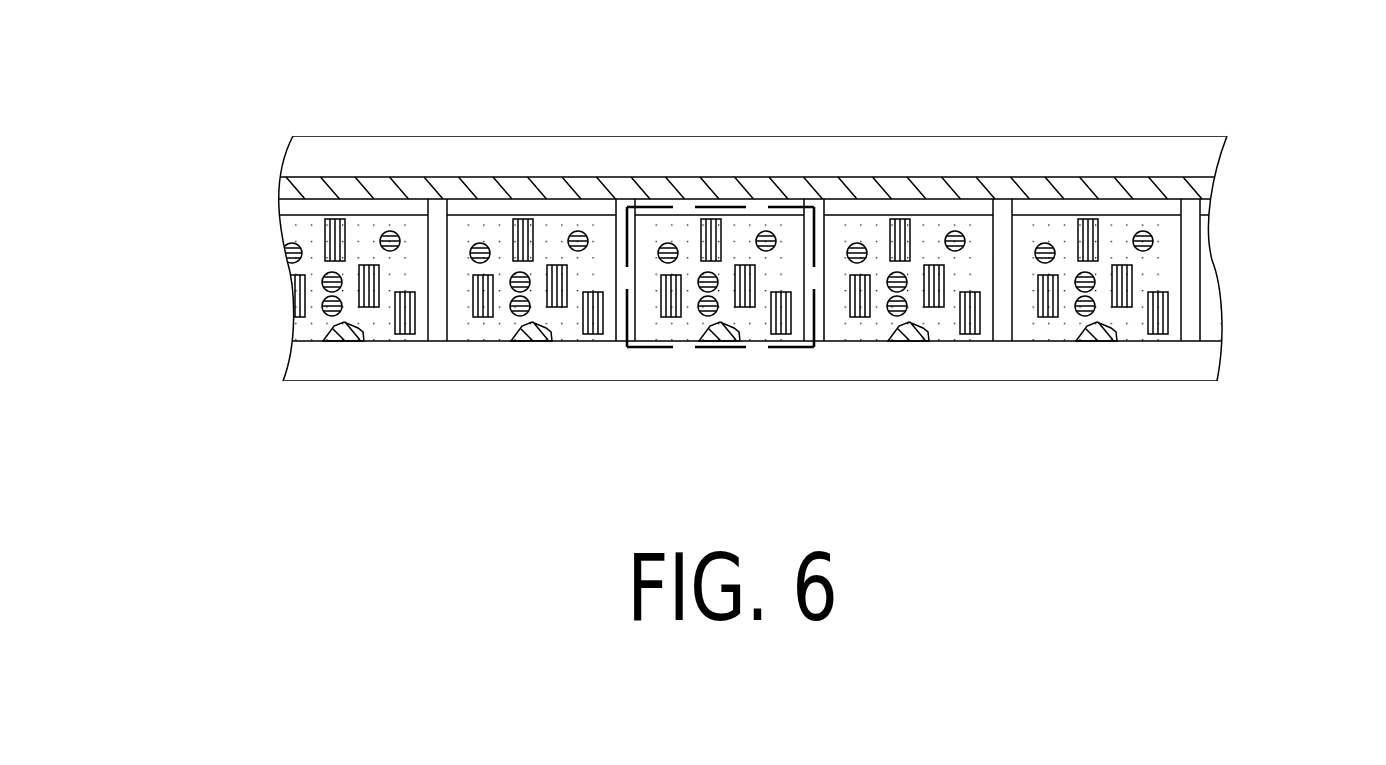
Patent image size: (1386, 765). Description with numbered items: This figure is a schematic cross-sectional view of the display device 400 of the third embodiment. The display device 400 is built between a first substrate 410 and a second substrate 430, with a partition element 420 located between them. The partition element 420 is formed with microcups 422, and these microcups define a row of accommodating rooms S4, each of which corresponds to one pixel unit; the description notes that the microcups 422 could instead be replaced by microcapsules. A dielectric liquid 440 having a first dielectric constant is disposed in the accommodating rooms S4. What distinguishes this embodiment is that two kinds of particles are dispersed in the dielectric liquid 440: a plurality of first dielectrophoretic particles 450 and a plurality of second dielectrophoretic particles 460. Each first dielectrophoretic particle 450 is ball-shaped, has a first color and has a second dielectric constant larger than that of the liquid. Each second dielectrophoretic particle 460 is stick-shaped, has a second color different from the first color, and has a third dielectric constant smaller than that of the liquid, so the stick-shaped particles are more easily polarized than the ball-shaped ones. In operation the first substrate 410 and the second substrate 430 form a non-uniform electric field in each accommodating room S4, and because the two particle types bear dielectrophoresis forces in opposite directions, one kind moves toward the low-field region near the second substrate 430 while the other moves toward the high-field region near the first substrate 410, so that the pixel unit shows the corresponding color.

The display device 400 is at (1385, 442).
The first substrate 410 is at (750, 361).
The partition element 420 is at (814, 270).
The microcups 422 is at (727, 205).
The second substrate 430 is at (762, 167).
The dielectric liquid 440 is at (814, 282).
The first dielectrophoretic particles 450 is at (811, 273).
The second dielectrophoretic particles 460 is at (820, 276).
The accommodating rooms S4 is at (799, 222).